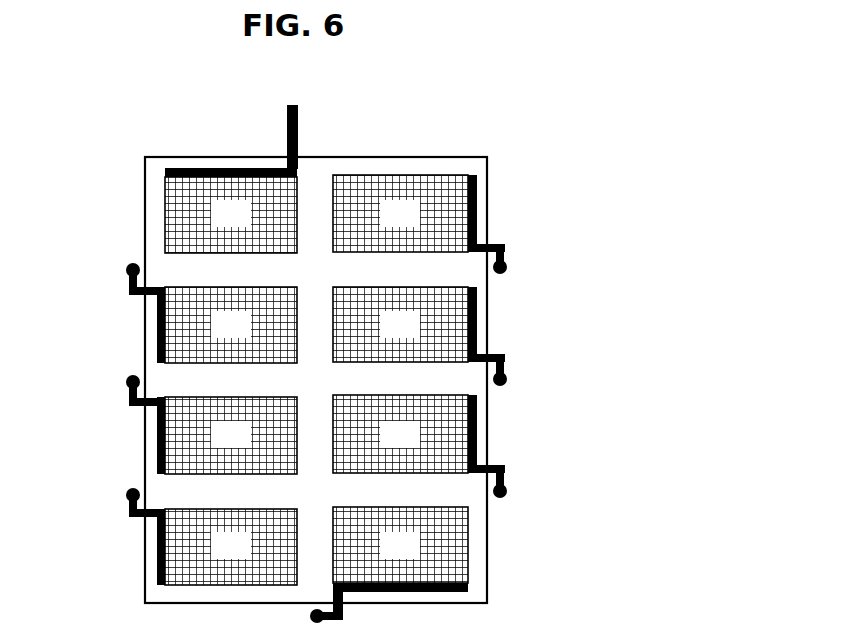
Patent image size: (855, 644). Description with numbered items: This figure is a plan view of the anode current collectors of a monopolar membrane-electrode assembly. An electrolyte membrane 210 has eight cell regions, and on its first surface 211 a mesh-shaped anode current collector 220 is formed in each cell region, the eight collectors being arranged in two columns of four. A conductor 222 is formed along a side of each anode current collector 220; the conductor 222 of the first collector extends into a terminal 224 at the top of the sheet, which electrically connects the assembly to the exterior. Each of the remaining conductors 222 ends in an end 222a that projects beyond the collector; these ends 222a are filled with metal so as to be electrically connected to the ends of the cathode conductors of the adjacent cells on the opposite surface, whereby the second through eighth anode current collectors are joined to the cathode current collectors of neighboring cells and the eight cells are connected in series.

The electrolyte membrane 210 is at (332, 344).
The first surface 211 is at (457, 162).
The anode current collector 220 is at (165, 211).
The conductor 222 is at (213, 168).
The end of the conductor 222a is at (127, 270).
The terminal 224 is at (291, 105).